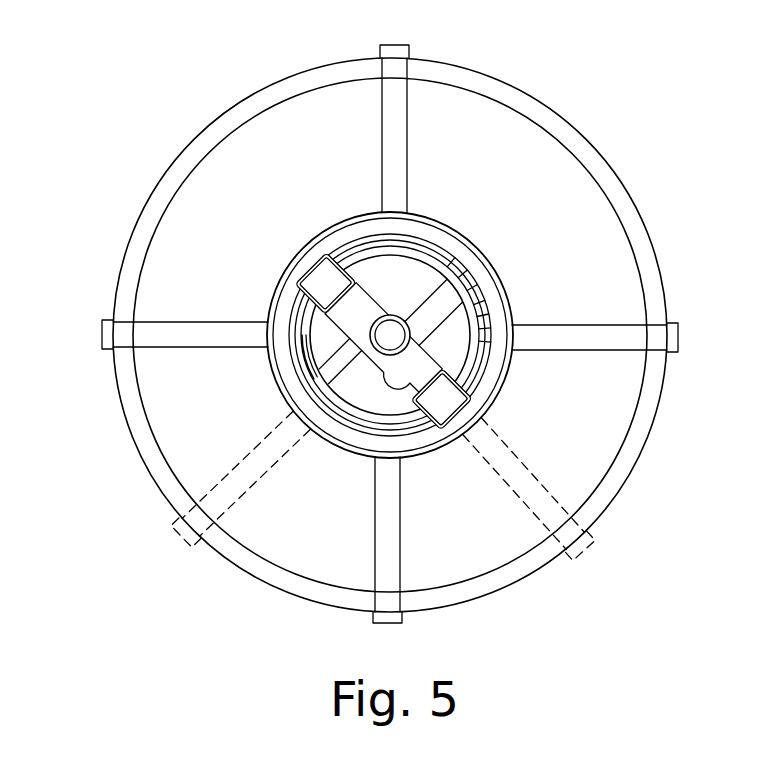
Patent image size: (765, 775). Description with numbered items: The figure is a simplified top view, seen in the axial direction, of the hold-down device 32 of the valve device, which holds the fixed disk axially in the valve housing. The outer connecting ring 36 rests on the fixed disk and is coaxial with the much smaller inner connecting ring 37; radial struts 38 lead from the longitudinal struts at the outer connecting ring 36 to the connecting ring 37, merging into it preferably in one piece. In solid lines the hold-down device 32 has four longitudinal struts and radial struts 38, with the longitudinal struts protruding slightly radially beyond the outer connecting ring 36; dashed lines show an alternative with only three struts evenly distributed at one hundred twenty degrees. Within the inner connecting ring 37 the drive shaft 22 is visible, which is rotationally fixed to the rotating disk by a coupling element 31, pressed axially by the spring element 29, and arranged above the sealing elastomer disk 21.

The sealing elastomer disk 21 is at (400, 277).
The drive shaft 22 is at (397, 330).
The spring element 29 is at (310, 370).
The coupling element 31 is at (323, 283).
The hold-down device 32 is at (550, 77).
The connecting ring 36 is at (640, 233).
The connecting ring 37 is at (500, 293).
The radial struts 38 is at (407, 97).